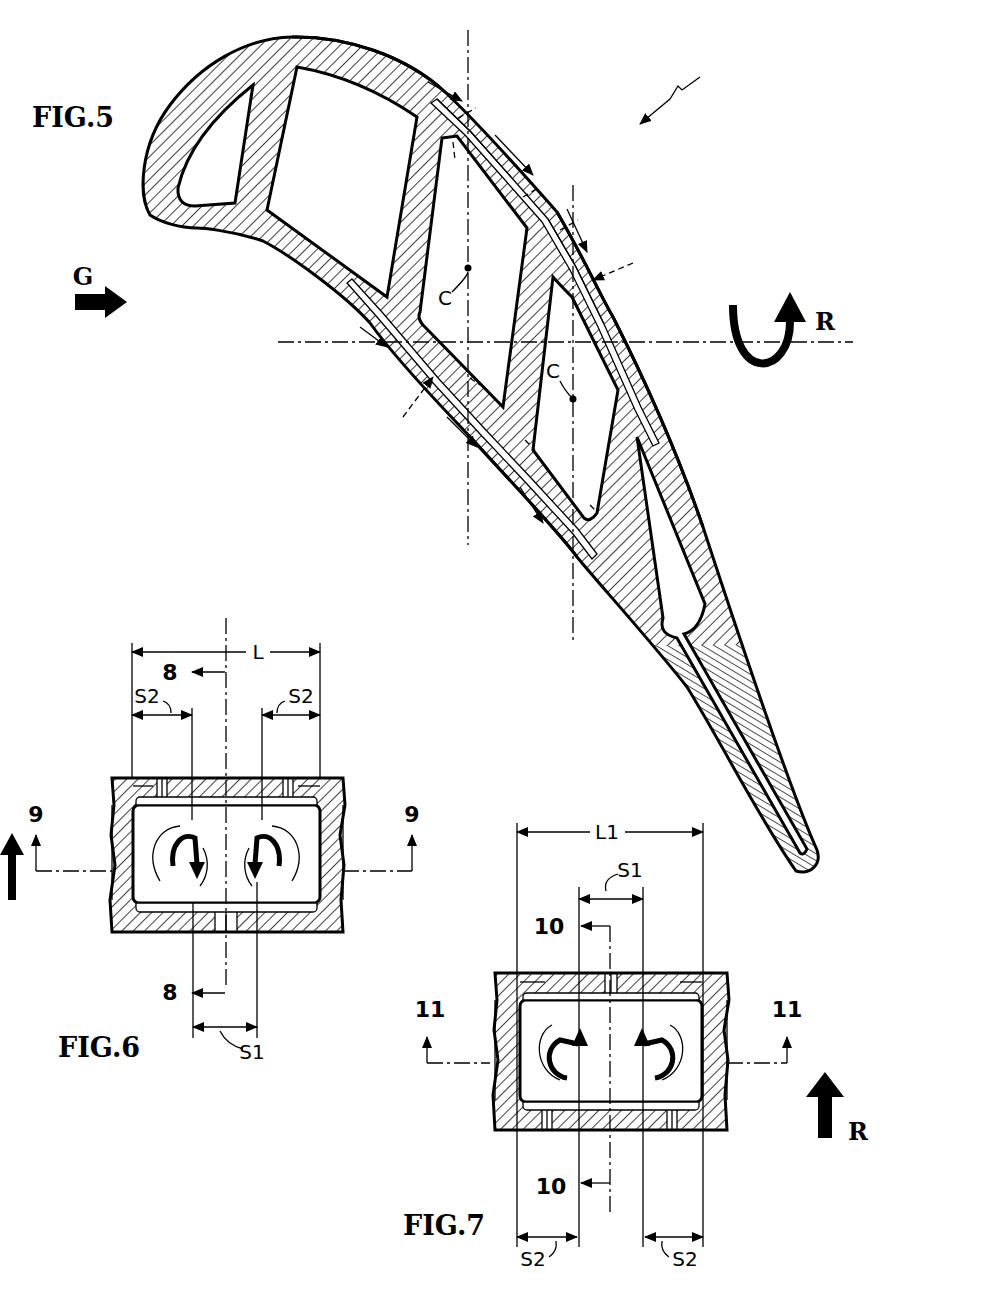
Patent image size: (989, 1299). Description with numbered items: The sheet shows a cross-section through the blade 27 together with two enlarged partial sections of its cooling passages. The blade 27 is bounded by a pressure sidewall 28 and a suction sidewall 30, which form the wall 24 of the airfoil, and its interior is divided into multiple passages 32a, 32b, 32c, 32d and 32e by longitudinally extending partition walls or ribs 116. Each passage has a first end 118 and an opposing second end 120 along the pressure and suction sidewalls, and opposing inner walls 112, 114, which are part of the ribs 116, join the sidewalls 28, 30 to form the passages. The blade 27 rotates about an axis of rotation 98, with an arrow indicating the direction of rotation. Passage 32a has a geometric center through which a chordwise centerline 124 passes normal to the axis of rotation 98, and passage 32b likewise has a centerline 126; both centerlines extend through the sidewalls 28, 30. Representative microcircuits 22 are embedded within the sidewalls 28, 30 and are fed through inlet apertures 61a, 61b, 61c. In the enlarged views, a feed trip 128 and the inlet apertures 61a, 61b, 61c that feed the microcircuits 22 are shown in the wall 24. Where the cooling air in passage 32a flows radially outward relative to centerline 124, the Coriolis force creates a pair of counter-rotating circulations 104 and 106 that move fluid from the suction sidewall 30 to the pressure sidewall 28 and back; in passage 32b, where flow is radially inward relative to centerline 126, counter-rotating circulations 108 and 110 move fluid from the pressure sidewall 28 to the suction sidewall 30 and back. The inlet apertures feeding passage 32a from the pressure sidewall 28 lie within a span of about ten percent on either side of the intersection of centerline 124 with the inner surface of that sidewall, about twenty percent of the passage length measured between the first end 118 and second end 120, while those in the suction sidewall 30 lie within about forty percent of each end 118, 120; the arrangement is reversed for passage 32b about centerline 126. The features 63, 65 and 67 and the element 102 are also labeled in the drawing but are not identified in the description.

In FIG. 5, the microcircuits 22 is at (522, 344).
In FIG. 5, the wall 24 is at (667, 434).
In FIG. 6, the wall 24 is at (118, 902).
In FIG. 7, the wall 24 is at (500, 1104).
In FIG. 5, the blade 27 is at (686, 93).
In FIG. 5, the pressure sidewall 28 is at (565, 547).
In FIG. 6, the pressure sidewall 28 is at (270, 920).
In FIG. 7, the pressure sidewall 28 is at (710, 1130).
In FIG. 5, the suction sidewall 30 is at (611, 309).
In FIG. 6, the suction sidewall 30 is at (325, 779).
In FIG. 7, the suction sidewall 30 is at (705, 975).
In FIG. 5, the passage 32a is at (477, 260).
In FIG. 6, the passage 32a is at (205, 861).
In FIG. 5, the passage 32b is at (548, 451).
In FIG. 7, the passage 32b is at (590, 1060).
In FIG. 5, the passage 32c is at (320, 187).
In FIG. 5, the passage 32d is at (630, 567).
In FIG. 5, the passage 32e is at (188, 176).
In FIG. 5, the inlet aperture 61a is at (453, 142).
In FIG. 6, the inlet aperture 61a is at (162, 777).
In FIG. 7, the inlet aperture 61a is at (620, 981).
In FIG. 5, the inlet aperture 61b is at (532, 222).
In FIG. 6, the inlet aperture 61b is at (288, 777).
In FIG. 7, the inlet aperture 61b is at (546, 1131).
In FIG. 5, the inlet aperture 61c is at (472, 378).
In FIG. 6, the inlet aperture 61c is at (216, 926).
In FIG. 7, the inlet aperture 61c is at (672, 1131).
In FIG. 5, the coolant flow 63 is at (452, 290).
In FIG. 5, the partition rib 65 is at (315, 68).
In FIG. 5, the peripheral wall 67 is at (375, 63).
In FIG. 5, the axis of rotation 98 is at (676, 342).
In FIG. 6, the first wall 102 is at (116, 853).
In FIG. 7, the first wall 102 is at (503, 1051).
In FIG. 6, the circulation 104 is at (257, 843).
In FIG. 6, the circulation 106 is at (202, 873).
In FIG. 7, the circulation 108 is at (643, 1036).
In FIG. 7, the circulation 110 is at (590, 1072).
In FIG. 6, the inner wall 112 is at (333, 856).
In FIG. 7, the inner wall 112 is at (712, 1049).
In FIG. 6, the inner wall 114 is at (133, 826).
In FIG. 7, the inner wall 114 is at (512, 1023).
In FIG. 5, the ribs 116 is at (400, 146).
In FIG. 6, the ribs 116 is at (345, 898).
In FIG. 7, the ribs 116 is at (730, 1095).
In FIG. 5, the first end 118 is at (457, 133).
In FIG. 6, the first end 118 is at (145, 780).
In FIG. 7, the first end 118 is at (527, 976).
In FIG. 5, the second end 120 is at (527, 217).
In FIG. 6, the second end 120 is at (312, 780).
In FIG. 7, the second end 120 is at (697, 976).
In FIG. 5, the centerline 124 is at (470, 78).
In FIG. 6, the centerline 124 is at (228, 624).
In FIG. 5, the centerline 126 is at (575, 200).
In FIG. 7, the centerline 126 is at (610, 1212).
In FIG. 6, the feed trip 128 is at (190, 806).
In FIG. 7, the feed trip 128 is at (580, 1003).